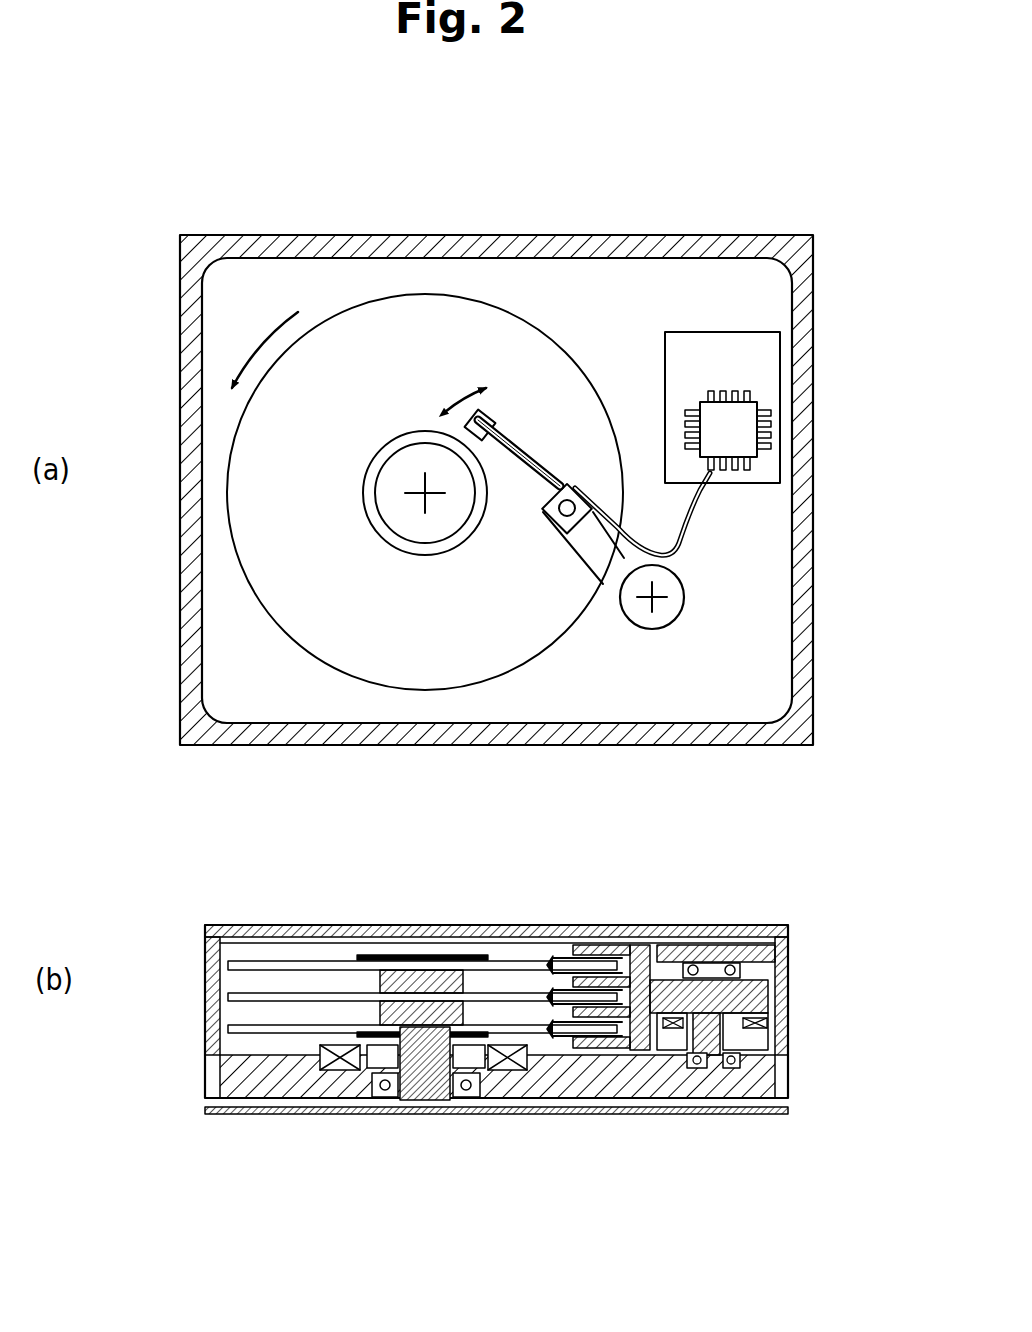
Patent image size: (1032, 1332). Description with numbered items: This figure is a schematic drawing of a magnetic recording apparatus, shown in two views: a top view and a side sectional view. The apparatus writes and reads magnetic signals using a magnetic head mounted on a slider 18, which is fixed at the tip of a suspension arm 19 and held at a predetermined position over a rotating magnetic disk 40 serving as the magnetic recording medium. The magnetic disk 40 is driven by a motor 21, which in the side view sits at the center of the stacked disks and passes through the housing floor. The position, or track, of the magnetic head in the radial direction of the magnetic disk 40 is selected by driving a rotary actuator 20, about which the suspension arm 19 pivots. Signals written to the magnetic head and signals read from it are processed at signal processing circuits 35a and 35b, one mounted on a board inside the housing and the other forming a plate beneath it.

The magnetic disk 40 is at (353, 353).
The slider 18 is at (483, 412).
The suspension arm 19 is at (517, 477).
The rotary actuator 20 is at (667, 625).
The signal processing circuit 35a is at (740, 423).
The motor 21 is at (430, 1092).
The signal processing circuit 35b is at (708, 1115).